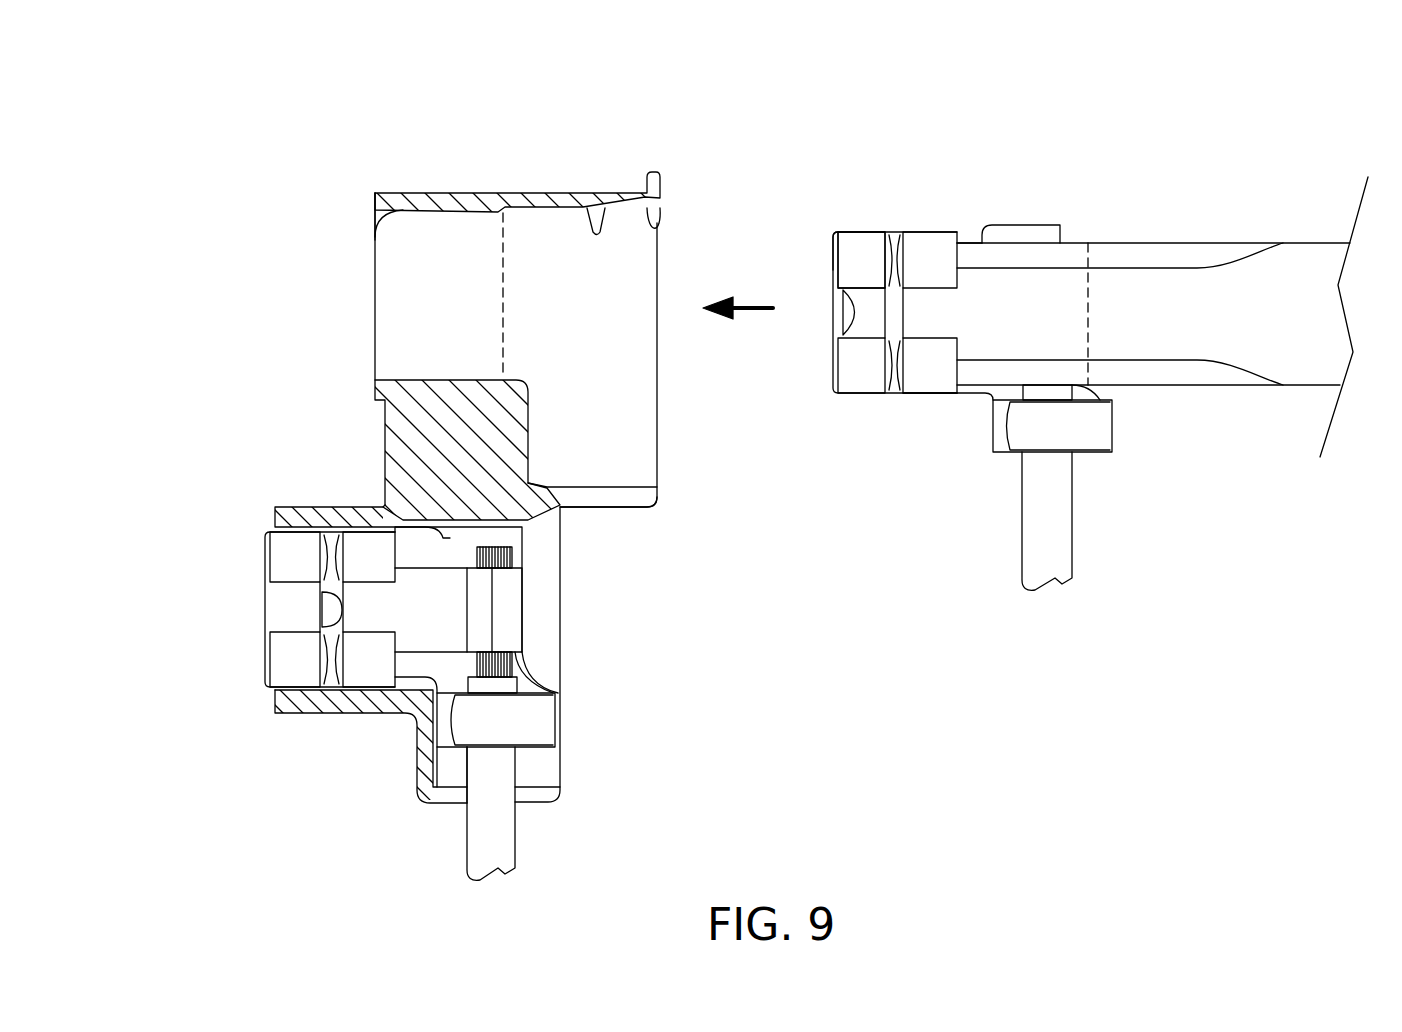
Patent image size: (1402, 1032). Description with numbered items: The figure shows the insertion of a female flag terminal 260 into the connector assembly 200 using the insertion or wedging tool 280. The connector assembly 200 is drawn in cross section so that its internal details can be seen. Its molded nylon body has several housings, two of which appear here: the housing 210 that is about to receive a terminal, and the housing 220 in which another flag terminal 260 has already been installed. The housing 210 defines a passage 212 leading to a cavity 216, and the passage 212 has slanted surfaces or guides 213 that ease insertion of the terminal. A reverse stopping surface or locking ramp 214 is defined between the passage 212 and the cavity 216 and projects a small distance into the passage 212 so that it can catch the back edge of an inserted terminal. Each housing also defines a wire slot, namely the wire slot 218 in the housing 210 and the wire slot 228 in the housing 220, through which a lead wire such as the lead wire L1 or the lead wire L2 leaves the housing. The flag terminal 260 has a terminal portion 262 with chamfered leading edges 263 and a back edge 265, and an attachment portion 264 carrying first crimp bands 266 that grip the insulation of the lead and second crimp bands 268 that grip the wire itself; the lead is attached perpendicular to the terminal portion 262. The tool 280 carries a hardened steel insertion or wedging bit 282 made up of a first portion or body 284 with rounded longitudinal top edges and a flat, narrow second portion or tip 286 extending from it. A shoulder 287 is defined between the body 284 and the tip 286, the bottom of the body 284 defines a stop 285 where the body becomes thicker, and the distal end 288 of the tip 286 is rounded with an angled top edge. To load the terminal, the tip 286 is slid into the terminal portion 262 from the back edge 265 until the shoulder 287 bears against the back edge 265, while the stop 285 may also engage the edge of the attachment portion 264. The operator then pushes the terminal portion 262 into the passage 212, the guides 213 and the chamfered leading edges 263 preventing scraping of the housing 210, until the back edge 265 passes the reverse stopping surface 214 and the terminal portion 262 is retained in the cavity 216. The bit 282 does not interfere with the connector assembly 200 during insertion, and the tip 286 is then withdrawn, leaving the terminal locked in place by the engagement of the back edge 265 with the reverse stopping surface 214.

The connector assembly 200 is at (240, 165).
The housing 210 is at (415, 195).
The passage 212 is at (587, 208).
The slanted surfaces or guides 213 is at (661, 220).
The reverse stopping surface 214 is at (505, 248).
The cavity 216 is at (373, 237).
The wire slot 218 is at (610, 468).
The housing 220 is at (343, 713).
The wire slot 228 is at (533, 772).
The flag terminal 260 is at (290, 553).
The terminal portion 262 is at (845, 262).
The leading edge 263 is at (833, 260).
The attachment portion 264 is at (1058, 225).
The back edge 265 is at (957, 243).
The first crimp bands 266 is at (520, 717).
The second crimp bands 268 is at (505, 598).
The insertion or wedging tool 280 is at (1208, 136).
The insertion or wedging bit 282 is at (1042, 324).
The body 284 is at (1203, 243).
The stop 285 is at (1092, 245).
The tip 286 is at (892, 313).
The shoulder 287 is at (945, 394).
The distal end 288 is at (852, 318).
The lead wire L1 is at (1072, 560).
The lead wire L2 is at (515, 865).